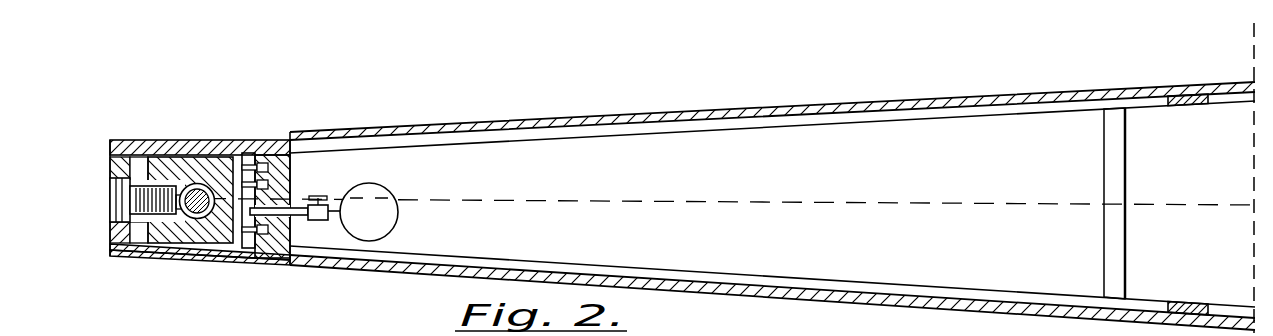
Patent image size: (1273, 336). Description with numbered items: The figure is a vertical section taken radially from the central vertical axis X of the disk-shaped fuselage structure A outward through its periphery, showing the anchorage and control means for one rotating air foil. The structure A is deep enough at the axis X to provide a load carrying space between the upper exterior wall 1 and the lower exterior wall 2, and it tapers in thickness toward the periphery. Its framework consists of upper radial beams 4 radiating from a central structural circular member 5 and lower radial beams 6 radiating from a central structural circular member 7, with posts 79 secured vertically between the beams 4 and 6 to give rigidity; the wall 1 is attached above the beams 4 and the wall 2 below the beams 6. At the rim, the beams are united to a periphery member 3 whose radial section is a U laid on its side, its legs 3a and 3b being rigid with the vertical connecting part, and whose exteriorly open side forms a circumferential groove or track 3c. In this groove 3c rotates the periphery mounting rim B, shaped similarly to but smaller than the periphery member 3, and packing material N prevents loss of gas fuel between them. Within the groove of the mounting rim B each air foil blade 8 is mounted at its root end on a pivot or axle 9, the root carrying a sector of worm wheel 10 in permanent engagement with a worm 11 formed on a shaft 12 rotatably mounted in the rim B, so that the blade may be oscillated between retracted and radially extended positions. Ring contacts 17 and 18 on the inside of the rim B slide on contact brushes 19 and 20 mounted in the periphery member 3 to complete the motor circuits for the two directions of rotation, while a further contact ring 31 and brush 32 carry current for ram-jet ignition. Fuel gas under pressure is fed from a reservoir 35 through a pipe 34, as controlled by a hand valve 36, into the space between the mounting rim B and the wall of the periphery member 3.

The upper exterior wall 1 is at (80, 210).
The lower exterior wall 2 is at (880, 300).
The periphery member 3 is at (113, 232).
The leg of the U 3a is at (163, 140).
The leg of the U 3b is at (187, 257).
The groove or track 3c is at (202, 253).
The upper radial beams 4 is at (768, 121).
The central structural circular member 5 is at (1186, 105).
The lower radial beams 6 is at (808, 285).
The central structural circular member 7 is at (1194, 308).
The air foil blade 8 is at (110, 185).
The pivot or axle 9 is at (140, 170).
The sector of worm wheel 10 is at (140, 198).
The worm 11 is at (170, 237).
The shaft 12 is at (192, 208).
The ring contact 17 is at (235, 157).
The ring contact 18 is at (335, 192).
The contact brush 19 is at (268, 155).
The contact brush 20 is at (293, 185).
The contact ring 31 is at (243, 240).
The brush 32 is at (275, 258).
The pipe 34 is at (304, 226).
The reservoir 35 is at (402, 208).
The hand valve 36 is at (432, 179).
The posts 79 is at (1127, 243).
The fuselage structure A is at (712, 110).
The mounting rim B is at (110, 157).
The packing material N is at (247, 155).
The axis X is at (1254, 45).